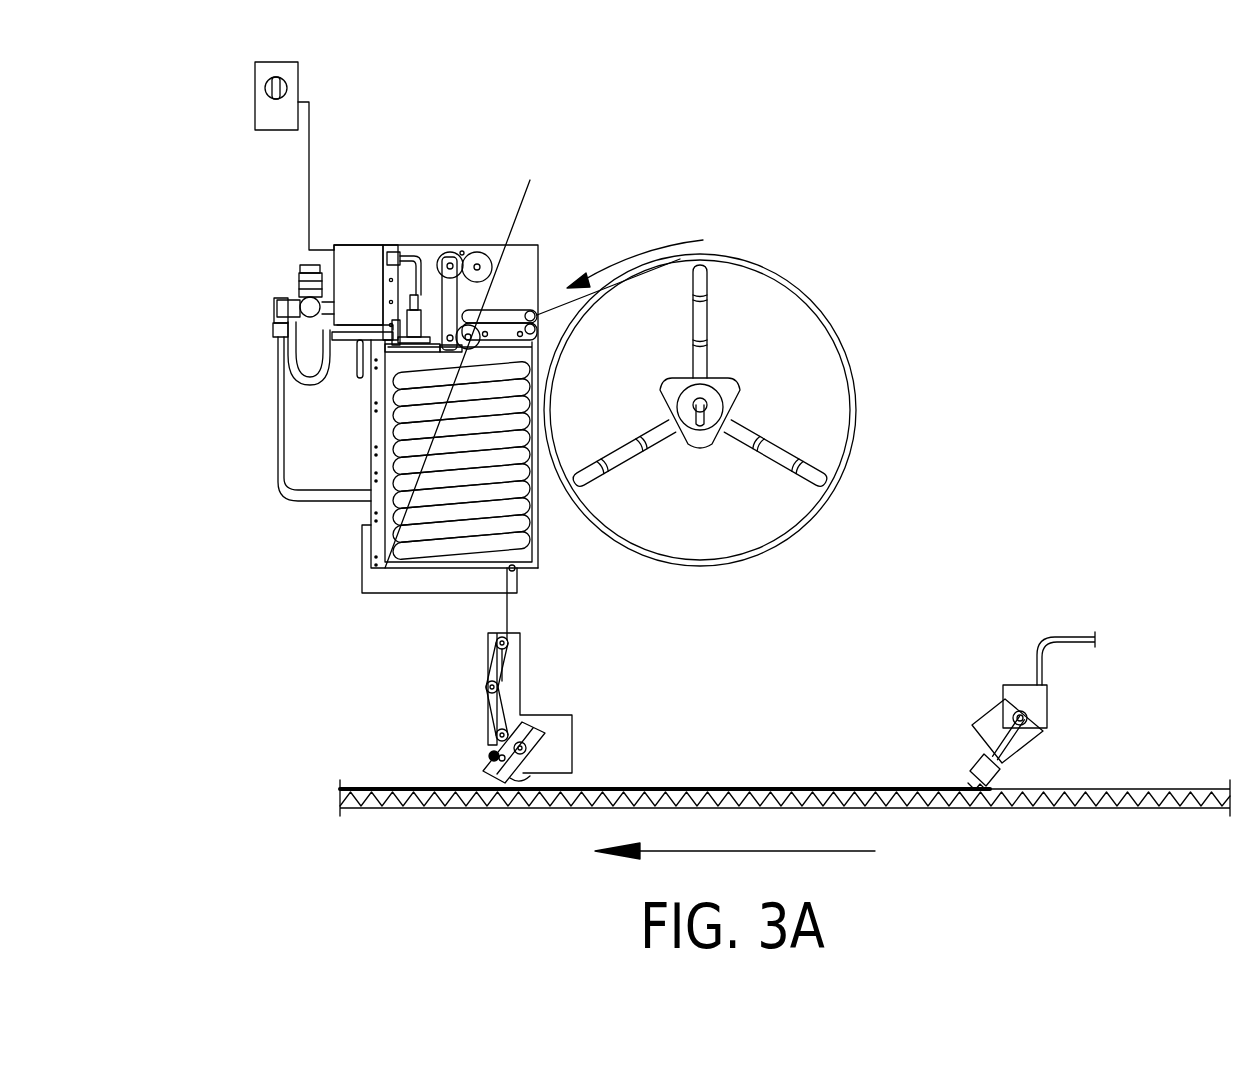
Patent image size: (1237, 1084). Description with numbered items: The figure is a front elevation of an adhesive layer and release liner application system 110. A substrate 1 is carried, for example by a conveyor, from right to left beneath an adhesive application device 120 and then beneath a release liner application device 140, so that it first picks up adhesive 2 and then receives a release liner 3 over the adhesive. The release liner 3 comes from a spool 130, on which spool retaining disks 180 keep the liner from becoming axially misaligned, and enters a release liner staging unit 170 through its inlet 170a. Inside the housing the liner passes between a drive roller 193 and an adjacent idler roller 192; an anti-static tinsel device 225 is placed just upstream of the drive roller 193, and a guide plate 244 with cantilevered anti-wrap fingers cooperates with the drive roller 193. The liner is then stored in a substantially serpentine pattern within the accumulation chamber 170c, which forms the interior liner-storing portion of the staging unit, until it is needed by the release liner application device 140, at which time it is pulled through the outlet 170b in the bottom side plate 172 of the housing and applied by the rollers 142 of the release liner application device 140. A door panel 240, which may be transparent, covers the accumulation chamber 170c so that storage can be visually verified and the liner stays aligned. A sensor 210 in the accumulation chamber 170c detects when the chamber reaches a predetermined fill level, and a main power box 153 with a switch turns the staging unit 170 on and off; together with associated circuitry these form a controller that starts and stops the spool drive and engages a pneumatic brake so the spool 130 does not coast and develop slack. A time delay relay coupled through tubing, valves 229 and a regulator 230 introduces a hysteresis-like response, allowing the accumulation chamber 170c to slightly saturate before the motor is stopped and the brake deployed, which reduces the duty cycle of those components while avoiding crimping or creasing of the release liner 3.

The substrate 1 is at (1148, 786).
The adhesive 2 is at (808, 786).
The release liner 3 is at (808, 448).
The adhesive layer and release liner application system 110 is at (986, 262).
The adhesive application device 120 is at (1022, 614).
The spool 130 is at (749, 403).
The release liner application device 140 is at (520, 708).
The rollers 142 is at (492, 690).
The main power box 153 is at (255, 120).
The release liner staging unit 170 is at (414, 182).
The inlet 170a is at (538, 314).
The outlet 170b is at (518, 574).
The accumulation chamber 170c is at (520, 532).
The bottom side plate 172 is at (415, 565).
The spool retaining disks 180 is at (798, 357).
The idler roller 192 is at (440, 340).
The drive roller 193 is at (478, 325).
The sensor 210 is at (432, 317).
The anti-static tinsel device 225 is at (508, 313).
The valves 229 is at (393, 331).
The regulator 230 is at (300, 268).
The door panel 240 is at (407, 548).
The guide plate 244 is at (395, 388).